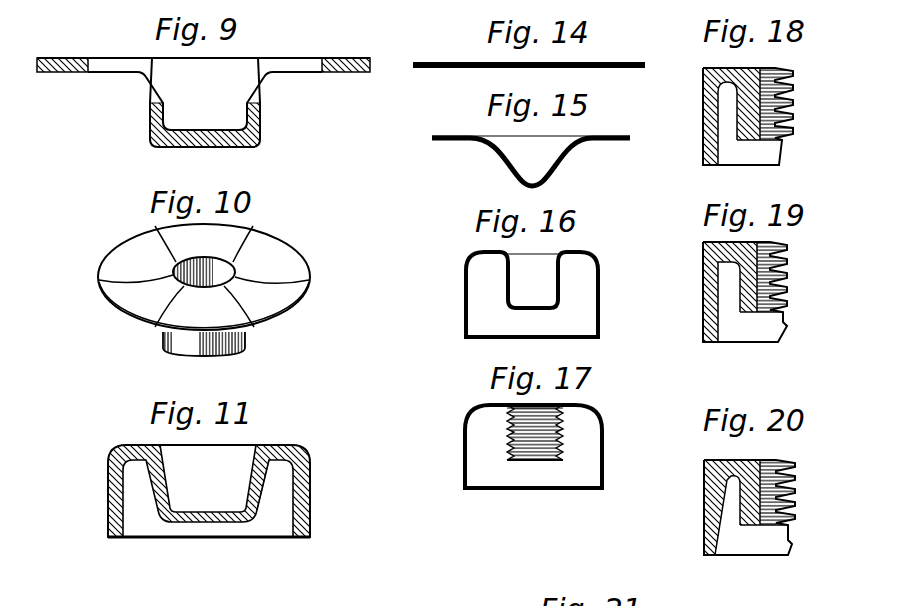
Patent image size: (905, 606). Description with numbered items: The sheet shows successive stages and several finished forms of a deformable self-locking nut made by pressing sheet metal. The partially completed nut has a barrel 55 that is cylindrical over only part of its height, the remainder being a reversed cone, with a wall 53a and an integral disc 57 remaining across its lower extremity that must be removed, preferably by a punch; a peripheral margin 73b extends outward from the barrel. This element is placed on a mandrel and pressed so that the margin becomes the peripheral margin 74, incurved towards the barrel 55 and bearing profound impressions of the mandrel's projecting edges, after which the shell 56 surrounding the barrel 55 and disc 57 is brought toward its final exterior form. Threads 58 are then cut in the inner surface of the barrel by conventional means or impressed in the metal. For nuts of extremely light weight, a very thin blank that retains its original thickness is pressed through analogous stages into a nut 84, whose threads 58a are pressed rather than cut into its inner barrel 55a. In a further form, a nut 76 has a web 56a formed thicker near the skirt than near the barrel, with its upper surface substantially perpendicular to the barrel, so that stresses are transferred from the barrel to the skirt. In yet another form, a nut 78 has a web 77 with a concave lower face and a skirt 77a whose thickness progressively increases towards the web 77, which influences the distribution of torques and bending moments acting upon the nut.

In FIG. 9, the peripheral margin 73b is at (82, 60).
In FIG. 9, the cup side wall 53a is at (154, 90).
In FIG. 9, the integral disc 57 is at (183, 147).
In FIG. 11, the integral disc 57 is at (186, 527).
In FIG. 9, the barrel 55 is at (262, 122).
In FIG. 10, the barrel 55 is at (165, 346).
In FIG. 11, the barrel 55 is at (265, 515).
In FIG. 10, the peripheral margin 74 is at (131, 300).
In FIG. 11, the outer shell 56 is at (130, 450).
In FIG. 17, the nut 84 is at (486, 466).
In FIG. 17, the threads 58a is at (518, 440).
In FIG. 17, the inner barrel 55a is at (540, 448).
In FIG. 18, the threads 58 is at (752, 118).
In FIG. 19, the web 56a is at (718, 252).
In FIG. 19, the nut 76 is at (714, 315).
In FIG. 20, the web 77 is at (730, 462).
In FIG. 20, the skirt 77a is at (706, 533).
In FIG. 20, the nut 78 is at (752, 541).